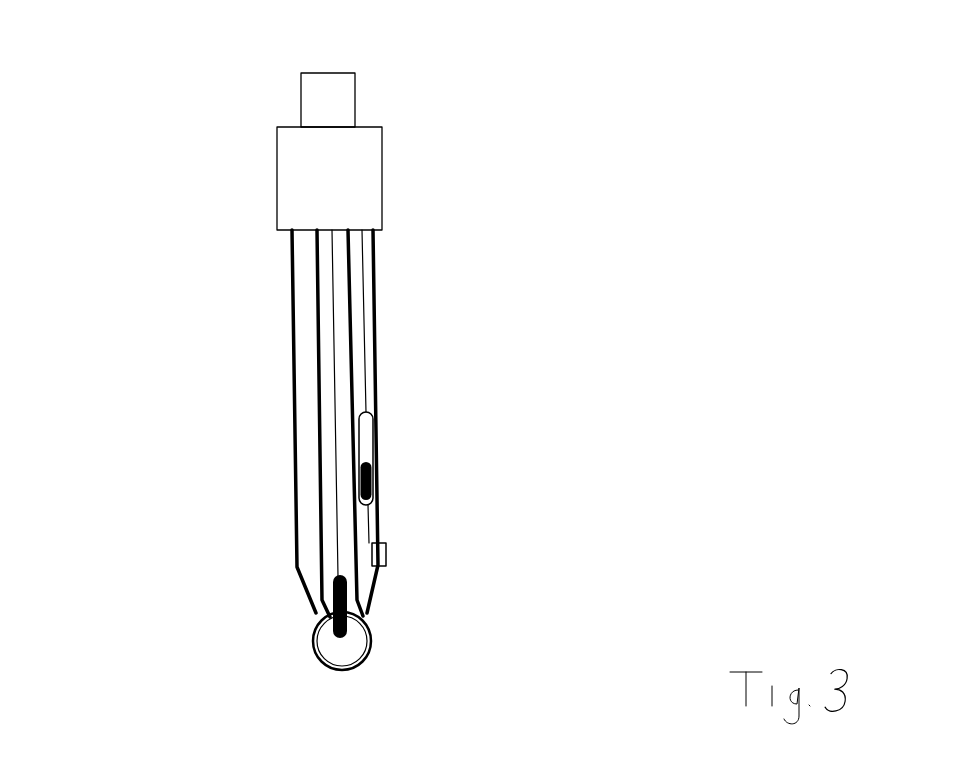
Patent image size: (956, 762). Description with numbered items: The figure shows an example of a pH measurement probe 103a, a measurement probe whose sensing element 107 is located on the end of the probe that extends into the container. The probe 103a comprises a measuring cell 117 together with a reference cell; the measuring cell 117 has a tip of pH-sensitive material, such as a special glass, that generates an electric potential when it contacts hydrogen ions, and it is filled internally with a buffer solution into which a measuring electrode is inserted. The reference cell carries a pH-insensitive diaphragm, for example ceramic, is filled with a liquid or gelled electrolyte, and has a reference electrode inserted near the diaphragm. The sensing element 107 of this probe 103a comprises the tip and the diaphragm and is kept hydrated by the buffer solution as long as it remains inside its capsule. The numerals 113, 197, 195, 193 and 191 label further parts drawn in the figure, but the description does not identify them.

The pH probe 103a is at (15, 0).
The measuring cell 117 is at (238, 421).
The reference electrode conductor 113 is at (426, 386).
The reference element 197 is at (423, 455).
The diaphragm 195 is at (426, 558).
The inner electrode 193 is at (231, 434).
The glass membrane bulb 191 is at (404, 649).
The sensing element 107 is at (469, 446).